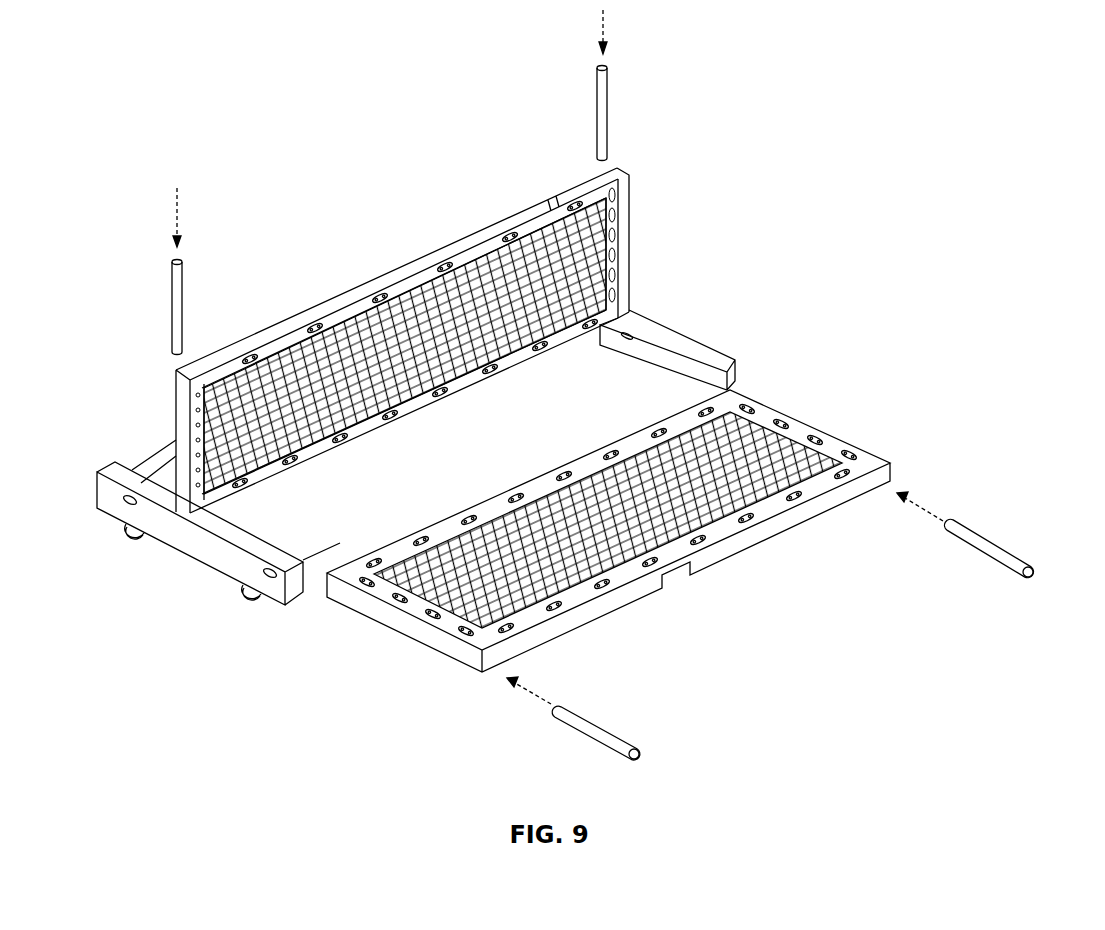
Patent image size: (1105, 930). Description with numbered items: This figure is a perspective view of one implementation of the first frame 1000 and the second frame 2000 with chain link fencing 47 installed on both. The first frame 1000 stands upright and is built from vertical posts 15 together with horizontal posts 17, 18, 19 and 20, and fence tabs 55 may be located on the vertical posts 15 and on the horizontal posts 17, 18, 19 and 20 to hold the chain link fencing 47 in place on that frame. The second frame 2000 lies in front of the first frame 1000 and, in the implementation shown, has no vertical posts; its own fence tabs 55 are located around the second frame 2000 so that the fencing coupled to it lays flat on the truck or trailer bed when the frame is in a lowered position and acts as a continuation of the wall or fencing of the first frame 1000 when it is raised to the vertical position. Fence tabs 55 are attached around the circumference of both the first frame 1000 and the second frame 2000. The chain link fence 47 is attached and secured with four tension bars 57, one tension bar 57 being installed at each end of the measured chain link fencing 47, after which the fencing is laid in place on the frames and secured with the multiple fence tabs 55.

The first frame 1000 is at (417, 182).
The second frame 2000 is at (708, 636).
The vertical posts 15 is at (183, 415).
The horizontal post 17 is at (257, 503).
The horizontal post 18 is at (240, 350).
The horizontal post 19 is at (400, 432).
The horizontal post 20 is at (395, 282).
The chain link fencing 47 is at (612, 282).
The fence tabs 55 is at (388, 611).
The tension bars 57 is at (612, 112).